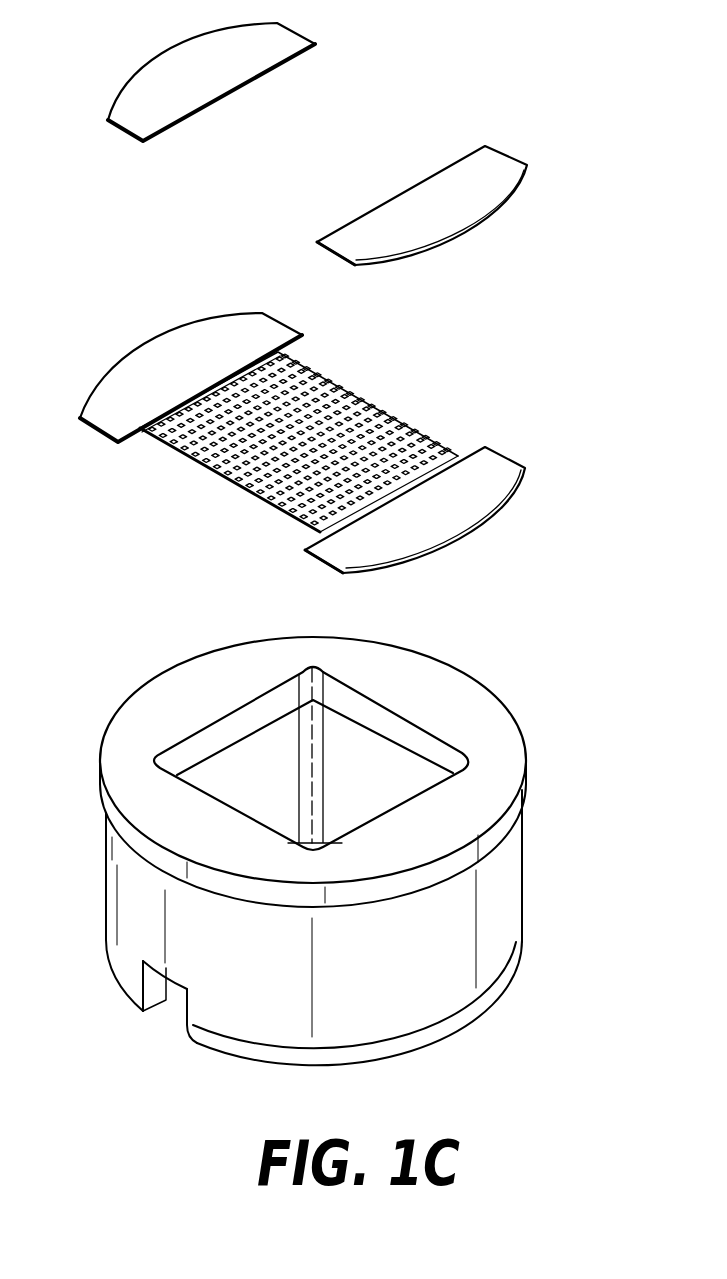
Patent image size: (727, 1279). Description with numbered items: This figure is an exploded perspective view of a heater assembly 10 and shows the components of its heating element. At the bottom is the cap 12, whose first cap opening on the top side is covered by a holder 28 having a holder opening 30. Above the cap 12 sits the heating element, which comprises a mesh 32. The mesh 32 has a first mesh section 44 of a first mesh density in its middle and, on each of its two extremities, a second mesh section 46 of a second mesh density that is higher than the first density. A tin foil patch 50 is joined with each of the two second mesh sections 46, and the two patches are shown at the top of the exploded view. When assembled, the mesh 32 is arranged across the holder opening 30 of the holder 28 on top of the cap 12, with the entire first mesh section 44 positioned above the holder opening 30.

The heater assembly 10 is at (588, 87).
The cap 12 is at (355, 851).
The holder 28 is at (527, 793).
The holder opening 30 is at (442, 748).
The mesh 32 is at (303, 453).
The first mesh section 44 is at (305, 508).
The second mesh section 46 is at (117, 378).
The tin foil patch 50 is at (137, 85).